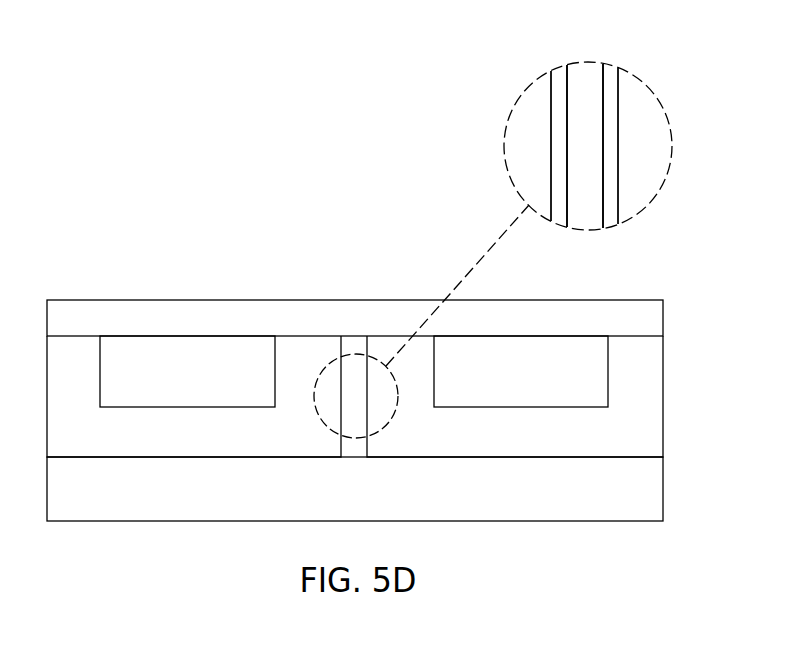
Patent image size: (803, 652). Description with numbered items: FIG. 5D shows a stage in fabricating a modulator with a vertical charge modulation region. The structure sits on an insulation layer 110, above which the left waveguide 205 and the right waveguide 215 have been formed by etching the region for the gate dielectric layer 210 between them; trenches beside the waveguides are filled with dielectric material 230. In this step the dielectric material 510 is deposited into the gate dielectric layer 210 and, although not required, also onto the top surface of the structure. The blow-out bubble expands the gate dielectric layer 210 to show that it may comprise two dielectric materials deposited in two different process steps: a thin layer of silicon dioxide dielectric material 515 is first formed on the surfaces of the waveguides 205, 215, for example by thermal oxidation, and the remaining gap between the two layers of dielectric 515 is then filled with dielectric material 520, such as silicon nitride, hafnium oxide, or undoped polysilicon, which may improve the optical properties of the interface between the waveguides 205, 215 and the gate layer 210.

The insulation layer 110 is at (605, 497).
The left waveguide 205 is at (77, 442).
The gate dielectric layer 210 is at (355, 352).
The right waveguide 215 is at (607, 442).
The dielectric material 230 is at (169, 385).
The dielectric material 510 is at (116, 299).
The dielectric material 515 is at (557, 227).
The dielectric material 520 is at (587, 233).